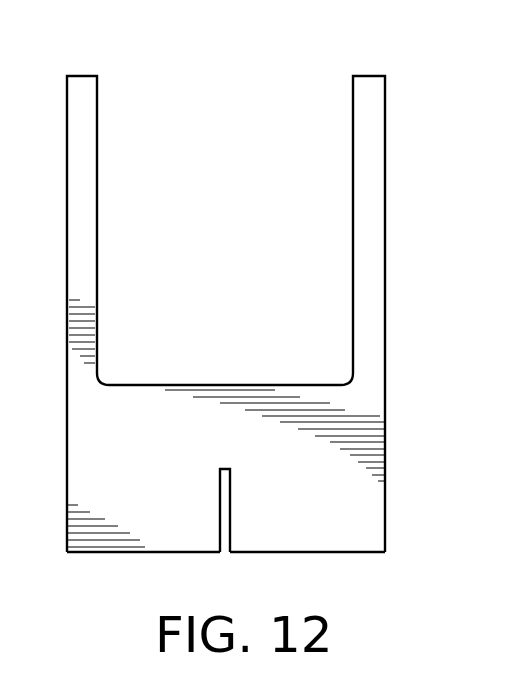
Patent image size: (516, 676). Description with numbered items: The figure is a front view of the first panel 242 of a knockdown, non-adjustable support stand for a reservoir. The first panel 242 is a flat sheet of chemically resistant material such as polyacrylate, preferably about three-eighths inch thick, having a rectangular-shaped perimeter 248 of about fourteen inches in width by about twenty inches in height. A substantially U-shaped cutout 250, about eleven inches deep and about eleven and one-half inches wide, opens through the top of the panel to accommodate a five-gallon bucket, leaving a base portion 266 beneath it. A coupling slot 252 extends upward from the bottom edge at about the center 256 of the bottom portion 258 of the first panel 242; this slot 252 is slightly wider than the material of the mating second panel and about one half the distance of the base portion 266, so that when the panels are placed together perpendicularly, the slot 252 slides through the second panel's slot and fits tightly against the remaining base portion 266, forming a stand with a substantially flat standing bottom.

The U-shaped cutout 250 is at (219, 133).
The rectangular-shaped perimeter 248 is at (386, 360).
The center 256 is at (233, 385).
The coupling slot 252 is at (226, 554).
The first panel 242 is at (336, 560).
The bottom portion 258 is at (80, 523).
The base portion 266 is at (318, 511).